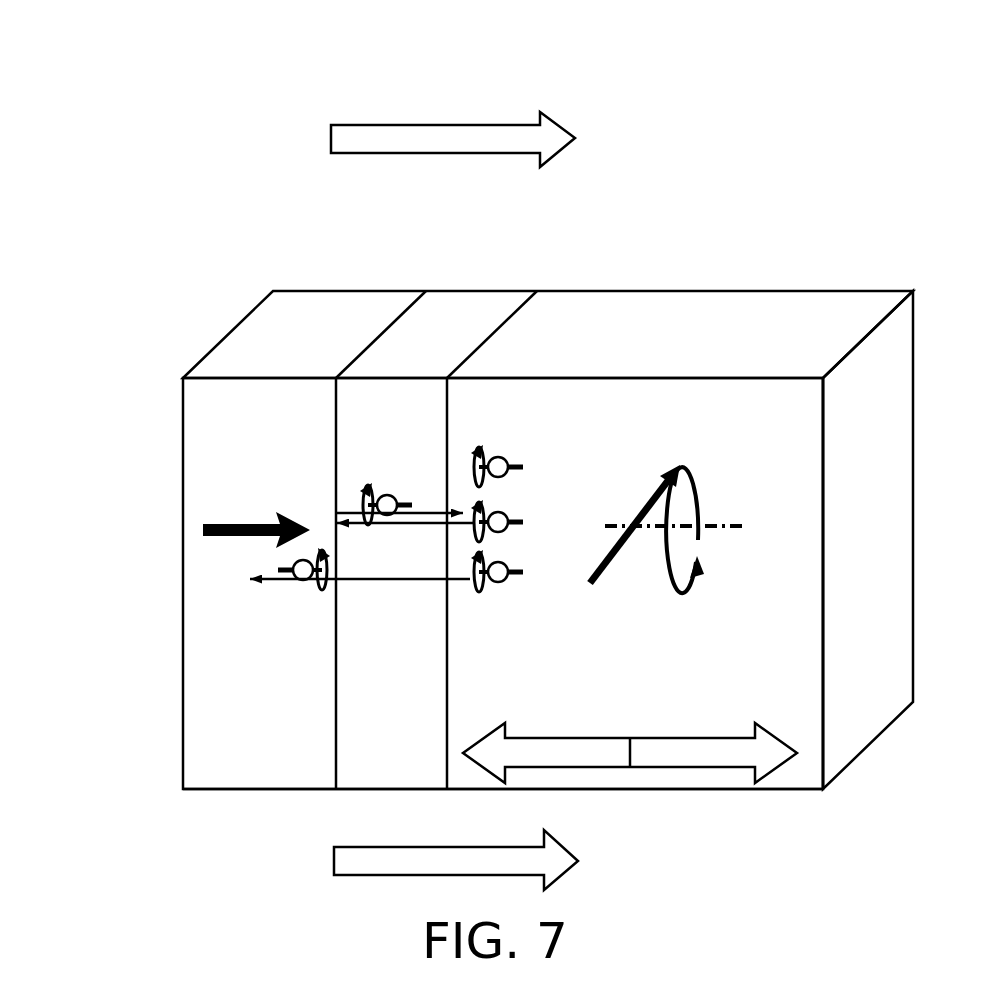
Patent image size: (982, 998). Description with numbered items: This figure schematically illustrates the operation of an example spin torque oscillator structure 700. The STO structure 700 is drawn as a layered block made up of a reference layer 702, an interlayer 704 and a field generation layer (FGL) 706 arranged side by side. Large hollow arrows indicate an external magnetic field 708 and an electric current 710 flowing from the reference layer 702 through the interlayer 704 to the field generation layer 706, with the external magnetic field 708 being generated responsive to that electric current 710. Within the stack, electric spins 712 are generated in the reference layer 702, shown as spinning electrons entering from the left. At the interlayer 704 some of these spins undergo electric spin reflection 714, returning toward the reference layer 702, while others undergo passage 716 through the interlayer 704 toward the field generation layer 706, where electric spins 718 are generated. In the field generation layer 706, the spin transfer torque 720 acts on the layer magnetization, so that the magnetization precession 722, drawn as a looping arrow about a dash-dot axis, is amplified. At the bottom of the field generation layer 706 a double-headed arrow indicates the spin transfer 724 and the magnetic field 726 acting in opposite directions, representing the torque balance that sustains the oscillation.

The STO structure 700 is at (548, 395).
The reference layer 702 is at (304, 501).
The interlayer 704 is at (436, 500).
The field generation layer (FGL) 706 is at (635, 513).
The external magnetic field 708 is at (453, 112).
The electric current 710 is at (456, 842).
The electric spins 712 is at (280, 560).
The electric spin reflection 714 is at (383, 483).
The passage 716 is at (388, 593).
The electric spins 718 is at (405, 485).
The spin transfer torque 720 is at (654, 556).
The magnetization precession 722 is at (682, 503).
The spin transfer 724 is at (546, 721).
The magnetic field 726 is at (713, 733).